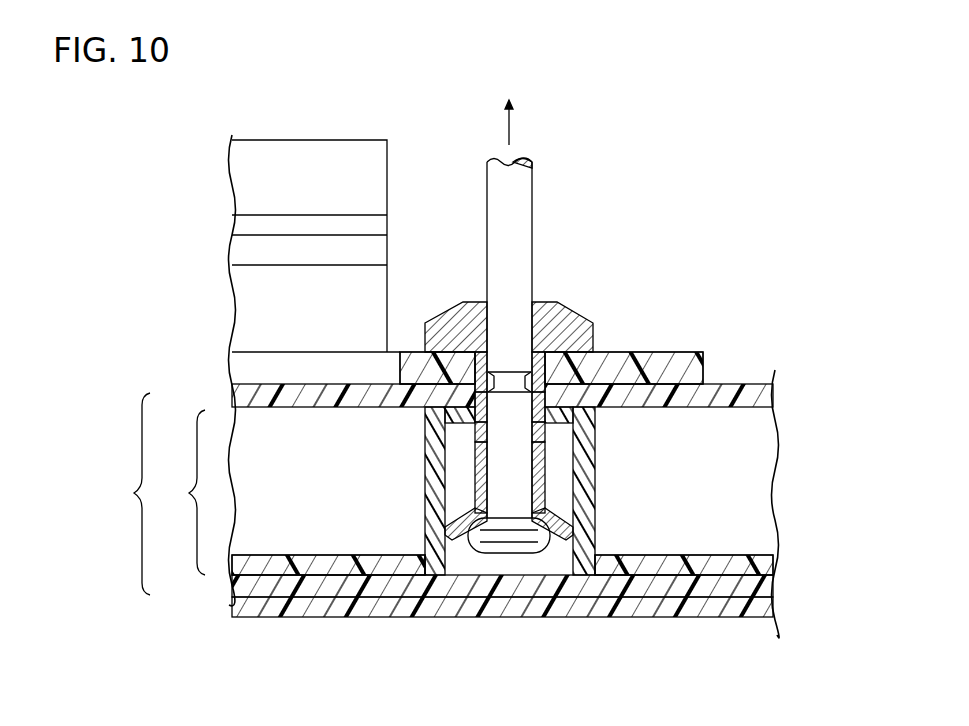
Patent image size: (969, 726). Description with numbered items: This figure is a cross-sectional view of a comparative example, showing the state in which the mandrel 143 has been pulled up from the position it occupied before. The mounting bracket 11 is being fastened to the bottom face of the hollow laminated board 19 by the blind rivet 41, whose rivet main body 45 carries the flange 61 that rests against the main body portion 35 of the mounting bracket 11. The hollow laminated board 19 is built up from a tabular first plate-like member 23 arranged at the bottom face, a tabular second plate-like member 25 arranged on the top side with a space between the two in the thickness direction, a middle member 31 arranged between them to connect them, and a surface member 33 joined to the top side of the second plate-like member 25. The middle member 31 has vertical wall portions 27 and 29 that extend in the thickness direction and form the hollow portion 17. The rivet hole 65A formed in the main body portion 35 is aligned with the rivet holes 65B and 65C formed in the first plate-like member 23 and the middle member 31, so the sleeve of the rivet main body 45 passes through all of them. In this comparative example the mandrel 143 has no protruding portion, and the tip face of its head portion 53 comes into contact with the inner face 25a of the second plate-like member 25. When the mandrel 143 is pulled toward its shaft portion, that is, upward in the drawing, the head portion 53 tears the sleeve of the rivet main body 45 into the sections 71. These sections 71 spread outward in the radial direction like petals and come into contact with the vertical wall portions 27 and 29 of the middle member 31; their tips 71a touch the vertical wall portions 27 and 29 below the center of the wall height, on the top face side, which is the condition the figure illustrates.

The mounting bracket 11 is at (318, 163).
The mandrel 143 is at (500, 176).
The blind rivet 41 is at (552, 408).
The flange 61 is at (585, 308).
The rivet main body 45 is at (557, 395).
The main body portion 35 is at (417, 350).
The rivet hole 65A is at (547, 350).
The first plate-like member 23 is at (742, 395).
The rivet hole 65B is at (548, 408).
The rivet hole 65C is at (548, 427).
The vertical wall portion 27 is at (433, 505).
The sections 71 is at (543, 485).
The tips of the sections 71a is at (573, 527).
The vertical wall portion 29 is at (585, 540).
The second plate-like member 25 is at (773, 587).
The surface member 33 is at (773, 612).
The hollow portion 17 is at (462, 553).
The head portion 53 is at (512, 543).
The inner face 25a is at (585, 575).
The hollow laminated board 19 is at (124, 494).
The middle member 31 is at (179, 492).